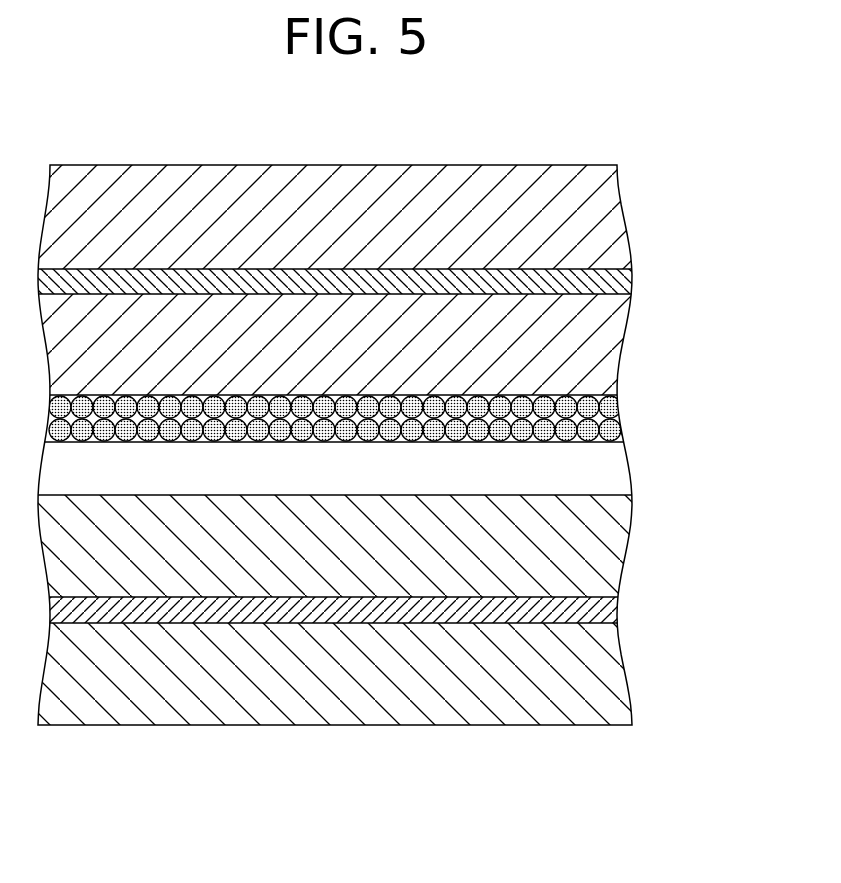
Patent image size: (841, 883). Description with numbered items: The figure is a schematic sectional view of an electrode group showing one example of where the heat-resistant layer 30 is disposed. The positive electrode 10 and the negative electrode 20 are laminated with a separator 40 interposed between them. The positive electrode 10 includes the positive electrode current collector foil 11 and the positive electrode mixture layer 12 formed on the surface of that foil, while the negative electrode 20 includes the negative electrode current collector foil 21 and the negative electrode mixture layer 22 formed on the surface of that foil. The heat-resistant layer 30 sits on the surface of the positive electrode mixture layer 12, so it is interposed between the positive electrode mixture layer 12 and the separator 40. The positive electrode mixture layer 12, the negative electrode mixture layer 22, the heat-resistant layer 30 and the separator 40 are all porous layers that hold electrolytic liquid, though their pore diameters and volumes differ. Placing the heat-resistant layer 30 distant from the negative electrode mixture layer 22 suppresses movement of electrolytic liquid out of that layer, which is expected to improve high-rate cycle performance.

The positive electrode 10 is at (403, 280).
The positive electrode current collector foil 11 is at (627, 285).
The positive electrode mixture layer 12 is at (615, 230).
The negative electrode 20 is at (403, 610).
The negative electrode current collector foil 21 is at (608, 605).
The negative electrode mixture layer 22 is at (608, 548).
The heat-resistant layer 30 is at (607, 417).
The separator 40 is at (608, 467).